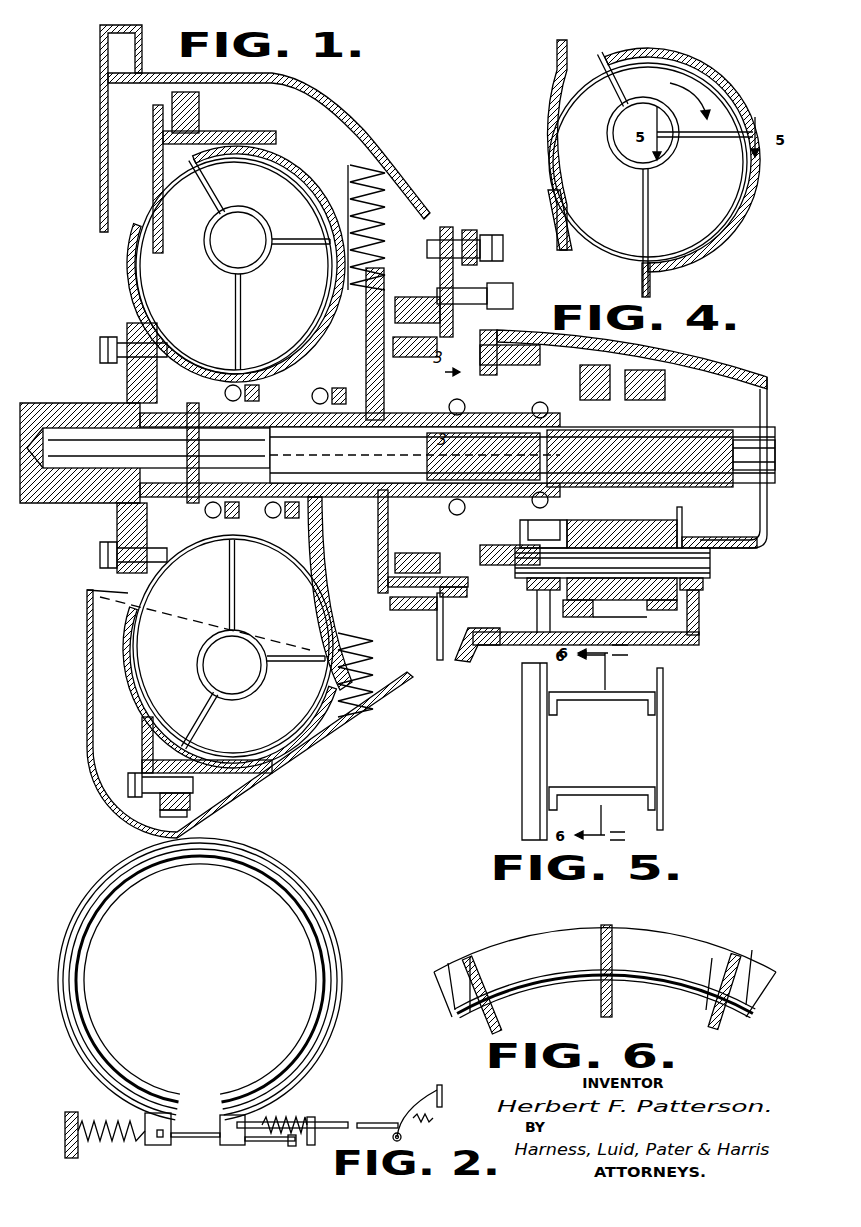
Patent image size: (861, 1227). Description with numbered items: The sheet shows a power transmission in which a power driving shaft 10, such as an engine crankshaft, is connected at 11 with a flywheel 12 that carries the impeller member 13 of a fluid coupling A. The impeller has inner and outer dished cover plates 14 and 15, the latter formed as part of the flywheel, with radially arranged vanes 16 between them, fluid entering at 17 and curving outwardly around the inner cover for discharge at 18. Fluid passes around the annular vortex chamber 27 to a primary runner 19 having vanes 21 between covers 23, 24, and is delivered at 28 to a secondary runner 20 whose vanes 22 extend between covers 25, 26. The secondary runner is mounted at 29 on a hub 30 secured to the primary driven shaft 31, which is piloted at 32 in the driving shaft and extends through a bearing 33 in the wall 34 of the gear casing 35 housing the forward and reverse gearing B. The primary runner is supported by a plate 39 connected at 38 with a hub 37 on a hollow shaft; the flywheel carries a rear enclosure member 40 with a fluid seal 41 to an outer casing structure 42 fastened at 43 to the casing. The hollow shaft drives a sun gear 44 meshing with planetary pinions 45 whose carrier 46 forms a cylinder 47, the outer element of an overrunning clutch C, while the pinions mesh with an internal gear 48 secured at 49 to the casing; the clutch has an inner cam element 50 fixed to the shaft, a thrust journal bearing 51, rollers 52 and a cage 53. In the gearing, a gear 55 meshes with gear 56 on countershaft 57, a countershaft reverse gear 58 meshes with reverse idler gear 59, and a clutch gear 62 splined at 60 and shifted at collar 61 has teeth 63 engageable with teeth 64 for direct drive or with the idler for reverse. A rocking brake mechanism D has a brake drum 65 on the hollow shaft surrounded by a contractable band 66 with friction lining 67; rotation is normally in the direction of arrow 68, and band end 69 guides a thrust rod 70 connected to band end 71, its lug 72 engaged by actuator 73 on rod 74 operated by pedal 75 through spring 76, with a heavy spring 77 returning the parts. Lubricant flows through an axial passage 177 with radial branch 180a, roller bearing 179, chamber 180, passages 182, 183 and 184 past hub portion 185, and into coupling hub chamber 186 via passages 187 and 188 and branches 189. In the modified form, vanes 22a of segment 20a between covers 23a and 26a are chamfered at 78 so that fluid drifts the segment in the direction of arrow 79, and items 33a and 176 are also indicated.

In FIG. 1, the power driving shaft 10 is at (72, 402).
In FIG. 1, the connection 11 is at (102, 352).
In FIG. 1, the flywheel 12 is at (148, 144).
In FIG. 4, the flywheel 12 is at (553, 62).
In FIG. 1, the impeller member 13 is at (160, 238).
In FIG. 4, the impeller member 13 is at (573, 125).
In FIG. 1, the inner cover plate 14 is at (228, 265).
In FIG. 1, the outer cover plate 15 is at (133, 222).
In FIG. 1, the vanes 16 is at (150, 262).
In FIG. 1, the fluid entry 17 is at (246, 316).
In FIG. 1, the fluid discharge 18 is at (215, 188).
In FIG. 1, the primary runner 19 is at (268, 148).
In FIG. 4, the primary runner 19 is at (697, 63).
In FIG. 1, the secondary runner 20 is at (372, 242).
In FIG. 1, the vanes 21 is at (293, 188).
In FIG. 4, the vanes 21 is at (713, 83).
In FIG. 1, the vanes 22 is at (238, 240).
In FIG. 1, the cover 23 is at (272, 222).
In FIG. 1, the cover 24 is at (285, 243).
In FIG. 1, the cover 25 is at (260, 258).
In FIG. 1, the cover 26 is at (323, 316).
In FIG. 1, the annular vortex chamber 27 is at (232, 278).
In FIG. 1, the fluid delivery gap 28 is at (362, 222).
In FIG. 4, the fluid delivery gap 28 is at (740, 107).
In FIG. 1, the mounting 29 is at (222, 385).
In FIG. 1, the hub 30 is at (329, 440).
In FIG. 1, the primary driven shaft 31 is at (192, 500).
In FIG. 1, the pilot 32 is at (65, 500).
In FIG. 1, the bearing 33 is at (534, 467).
In FIG. 1, the collar 33a is at (508, 345).
In FIG. 1, the wall 34 is at (602, 455).
In FIG. 1, the gear casing 35 is at (567, 352).
In FIG. 1, the hub 37 is at (235, 535).
In FIG. 1, the connection 38 is at (270, 530).
In FIG. 1, the plate 39 is at (318, 594).
In FIG. 4, the plate 39 is at (720, 250).
In FIG. 1, the rear enclosure member 40 is at (370, 690).
In FIG. 1, the fluid seal 41 is at (359, 468).
In FIG. 1, the outer casing structure 42 is at (320, 108).
In FIG. 1, the fastening 43 is at (470, 240).
In FIG. 1, the sun gear 44 is at (399, 468).
In FIG. 1, the planetary pinions 45 is at (442, 627).
In FIG. 1, the carrier 46 is at (421, 435).
In FIG. 1, the cylinder 47 is at (485, 563).
In FIG. 1, the internal gear 48 is at (410, 298).
In FIG. 1, the securing point 49 is at (486, 292).
In FIG. 1, the inner cam element 50 is at (165, 500).
In FIG. 1, the thrust journal bearing 51 is at (483, 458).
In FIG. 1, the clutch rollers 52 is at (485, 555).
In FIG. 1, the cage 53 is at (564, 385).
In FIG. 1, the gear 55 is at (601, 382).
In FIG. 1, the gear 56 is at (600, 610).
In FIG. 1, the countershaft 57 is at (695, 570).
In FIG. 1, the countershaft reverse gear 58 is at (680, 525).
In FIG. 1, the reverse idler gear 59 is at (655, 510).
In FIG. 1, the spline 60 is at (679, 408).
In FIG. 1, the collar 61 is at (687, 383).
In FIG. 1, the clutch gear 62 is at (646, 385).
In FIG. 1, the teeth 63 is at (661, 458).
In FIG. 1, the teeth 64 is at (567, 530).
In FIG. 1, the brake drum 65 is at (377, 322).
In FIG. 2, the brake drum 65 is at (305, 920).
In FIG. 1, the contractable band 66 is at (392, 660).
In FIG. 2, the contractable band 66 is at (342, 1000).
In FIG. 1, the friction brake lining 67 is at (455, 610).
In FIG. 2, the friction brake lining 67 is at (332, 975).
In FIG. 2, the arrow 68 is at (100, 902).
In FIG. 2, the band end 69 is at (228, 1145).
In FIG. 2, the thrust rod 70 is at (183, 1137).
In FIG. 2, the band end 71 is at (145, 1145).
In FIG. 2, the lug 72 is at (290, 1146).
In FIG. 2, the actuator 73 is at (310, 1147).
In FIG. 2, the rod 74 is at (330, 1122).
In FIG. 2, the pedal 75 is at (437, 1090).
In FIG. 2, the spring 76 is at (285, 1117).
In FIG. 2, the spring 77 is at (90, 1142).
In FIG. 6, the chamfer 78 is at (607, 925).
In FIG. 5, the arrow 79 is at (671, 755).
In FIG. 6, the arrow 79 is at (515, 923).
In FIG. 1, the end cap 176 is at (750, 535).
In FIG. 1, the axial passage 177 is at (518, 455).
In FIG. 1, the roller bearing 179 is at (590, 445).
In FIG. 1, the oil containing chamber 180 is at (520, 640).
In FIG. 1, the radial branch passage 180a is at (470, 440).
In FIG. 1, the passage 182 is at (400, 498).
In FIG. 1, the passage 183 is at (390, 440).
In FIG. 1, the passage 184 is at (340, 468).
In FIG. 1, the inner annular hub portion 185 is at (305, 468).
In FIG. 1, the coupling hub chamber 186 is at (100, 555).
In FIG. 1, the passage 187 is at (193, 412).
In FIG. 1, the passage 188 is at (122, 372).
In FIG. 1, the branches 189 is at (140, 440).
In FIG. 4, the secondary runner segment 20a is at (713, 193).
In FIG. 5, the secondary runner segment 20a is at (665, 680).
In FIG. 6, the secondary runner segment 20a is at (478, 948).
In FIG. 4, the vanes 22a is at (703, 212).
In FIG. 5, the vanes 22a is at (605, 705).
In FIG. 6, the vanes 22a is at (602, 1003).
In FIG. 4, the inner cover 23a is at (657, 172).
In FIG. 5, the inner cover 23a is at (545, 760).
In FIG. 6, the inner cover 23a is at (668, 945).
In FIG. 4, the outer cover 26a is at (680, 257).
In FIG. 5, the outer cover 26a is at (664, 775).
In FIG. 1, the fluid coupling A is at (322, 150).
In FIG. 1, the forward and reverse driving gearing B is at (583, 377).
In FIG. 1, the overrunning clutch C is at (448, 553).
In FIG. 1, the rocking brake mechanism D is at (427, 660).
In FIG. 2, the rocking brake mechanism D is at (282, 868).